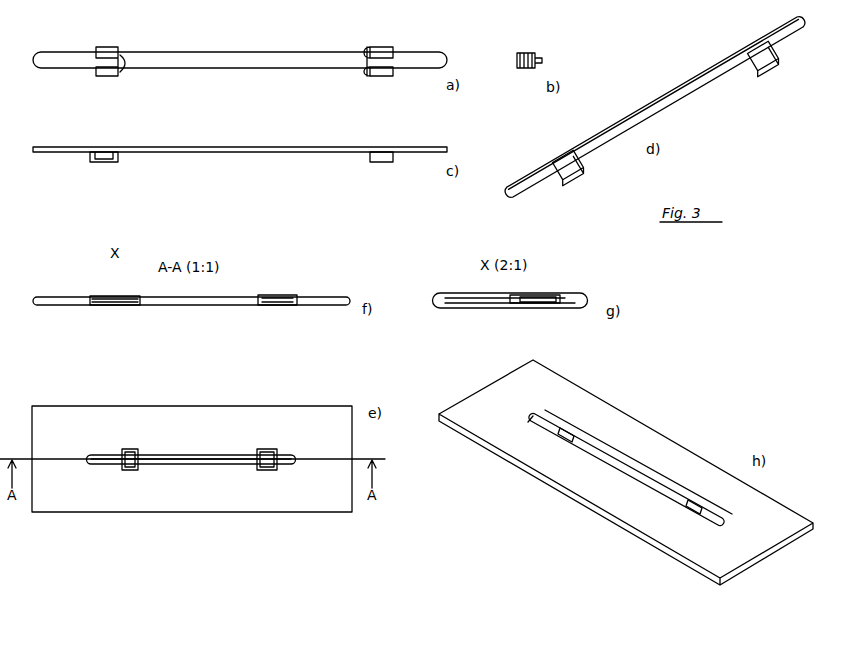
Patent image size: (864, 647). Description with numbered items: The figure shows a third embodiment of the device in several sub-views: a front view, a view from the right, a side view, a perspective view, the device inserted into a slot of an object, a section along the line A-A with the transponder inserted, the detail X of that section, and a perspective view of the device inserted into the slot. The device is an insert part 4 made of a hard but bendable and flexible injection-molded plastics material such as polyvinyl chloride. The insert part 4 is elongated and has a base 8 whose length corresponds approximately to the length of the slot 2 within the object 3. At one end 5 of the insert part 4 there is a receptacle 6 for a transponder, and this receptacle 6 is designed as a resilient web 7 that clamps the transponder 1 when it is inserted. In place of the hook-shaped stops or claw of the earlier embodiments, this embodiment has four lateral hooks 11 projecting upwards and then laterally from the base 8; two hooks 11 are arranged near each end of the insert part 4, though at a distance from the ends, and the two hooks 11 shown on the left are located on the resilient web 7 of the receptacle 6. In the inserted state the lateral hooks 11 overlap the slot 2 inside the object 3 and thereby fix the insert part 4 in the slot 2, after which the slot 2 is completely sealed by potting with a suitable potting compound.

The transponder 1 is at (470, 298).
The slot 2 is at (262, 455).
The object 3 is at (325, 305).
The insert part 4 is at (246, 68).
The end 5 is at (83, 70).
The receptacle 6 is at (108, 147).
The resilient web 7 is at (128, 70).
The base 8 is at (193, 68).
The lateral hooks 11 is at (122, 60).